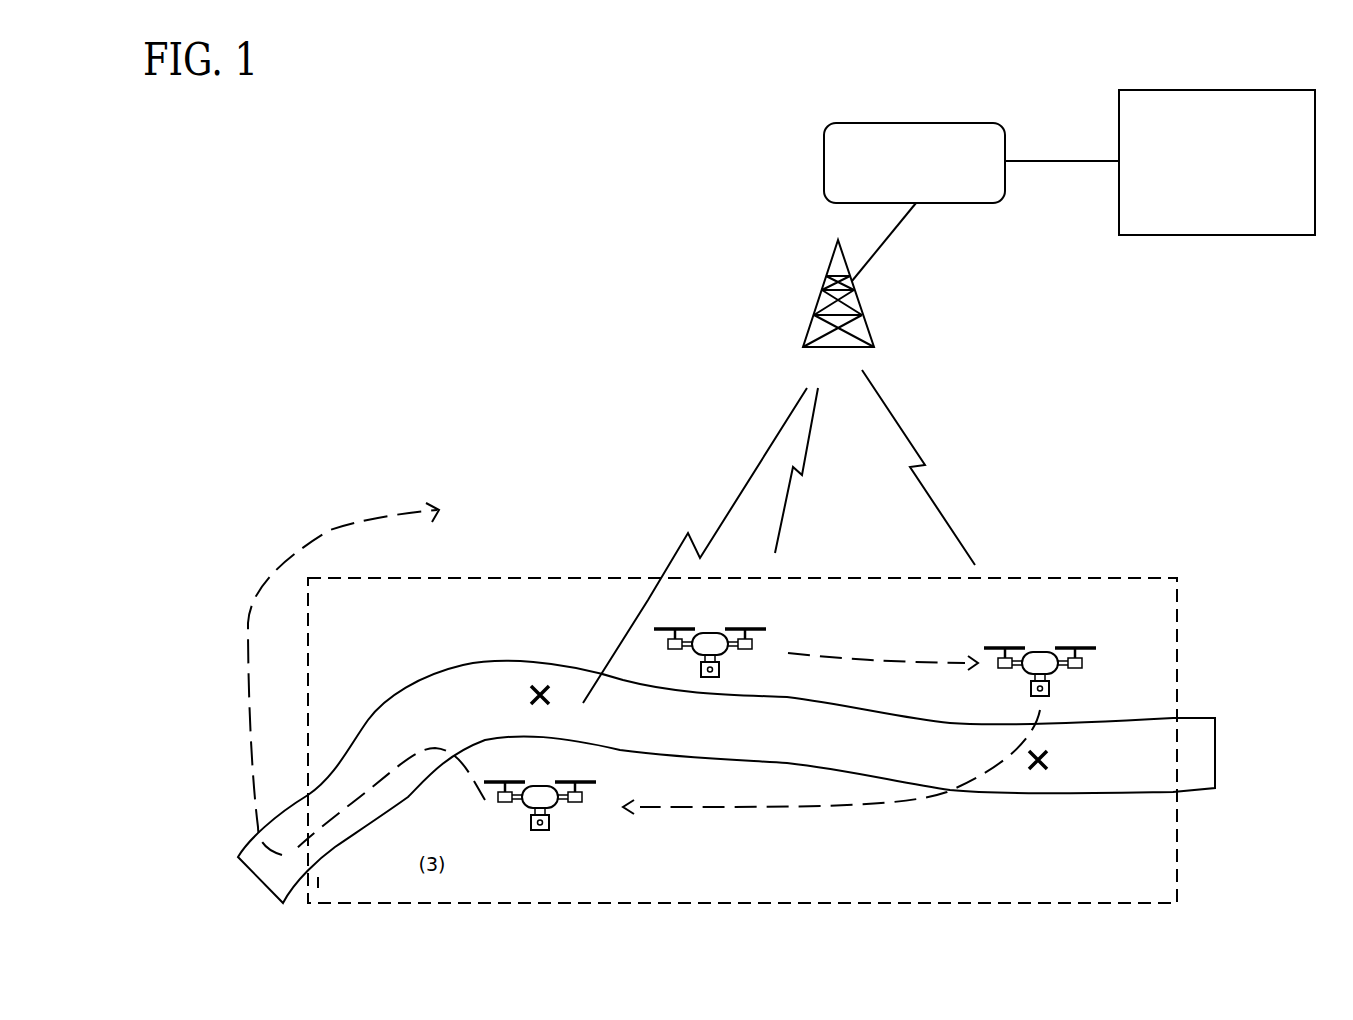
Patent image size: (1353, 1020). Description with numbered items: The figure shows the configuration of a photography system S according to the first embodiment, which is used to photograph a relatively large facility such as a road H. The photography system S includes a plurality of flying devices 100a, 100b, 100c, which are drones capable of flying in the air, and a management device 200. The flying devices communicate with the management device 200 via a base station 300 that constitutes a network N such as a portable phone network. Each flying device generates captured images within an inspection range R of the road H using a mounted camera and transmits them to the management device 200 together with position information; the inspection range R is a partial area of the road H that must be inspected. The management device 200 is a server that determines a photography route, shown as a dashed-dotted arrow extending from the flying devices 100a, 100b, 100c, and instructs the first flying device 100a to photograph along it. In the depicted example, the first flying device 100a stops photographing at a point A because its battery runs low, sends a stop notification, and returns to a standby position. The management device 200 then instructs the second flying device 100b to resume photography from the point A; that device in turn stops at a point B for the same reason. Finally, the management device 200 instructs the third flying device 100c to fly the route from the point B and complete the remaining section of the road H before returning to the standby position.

The photography system S is at (702, 132).
The network N is at (965, 122).
The management device 200 is at (1283, 90).
The base station 300 is at (863, 310).
The inspection range R is at (1140, 578).
The road H is at (865, 713).
The point A is at (1038, 773).
The point B is at (540, 710).
The first flying device 100a is at (712, 632).
The second flying device 100b is at (1043, 651).
The third flying device 100c is at (543, 785).